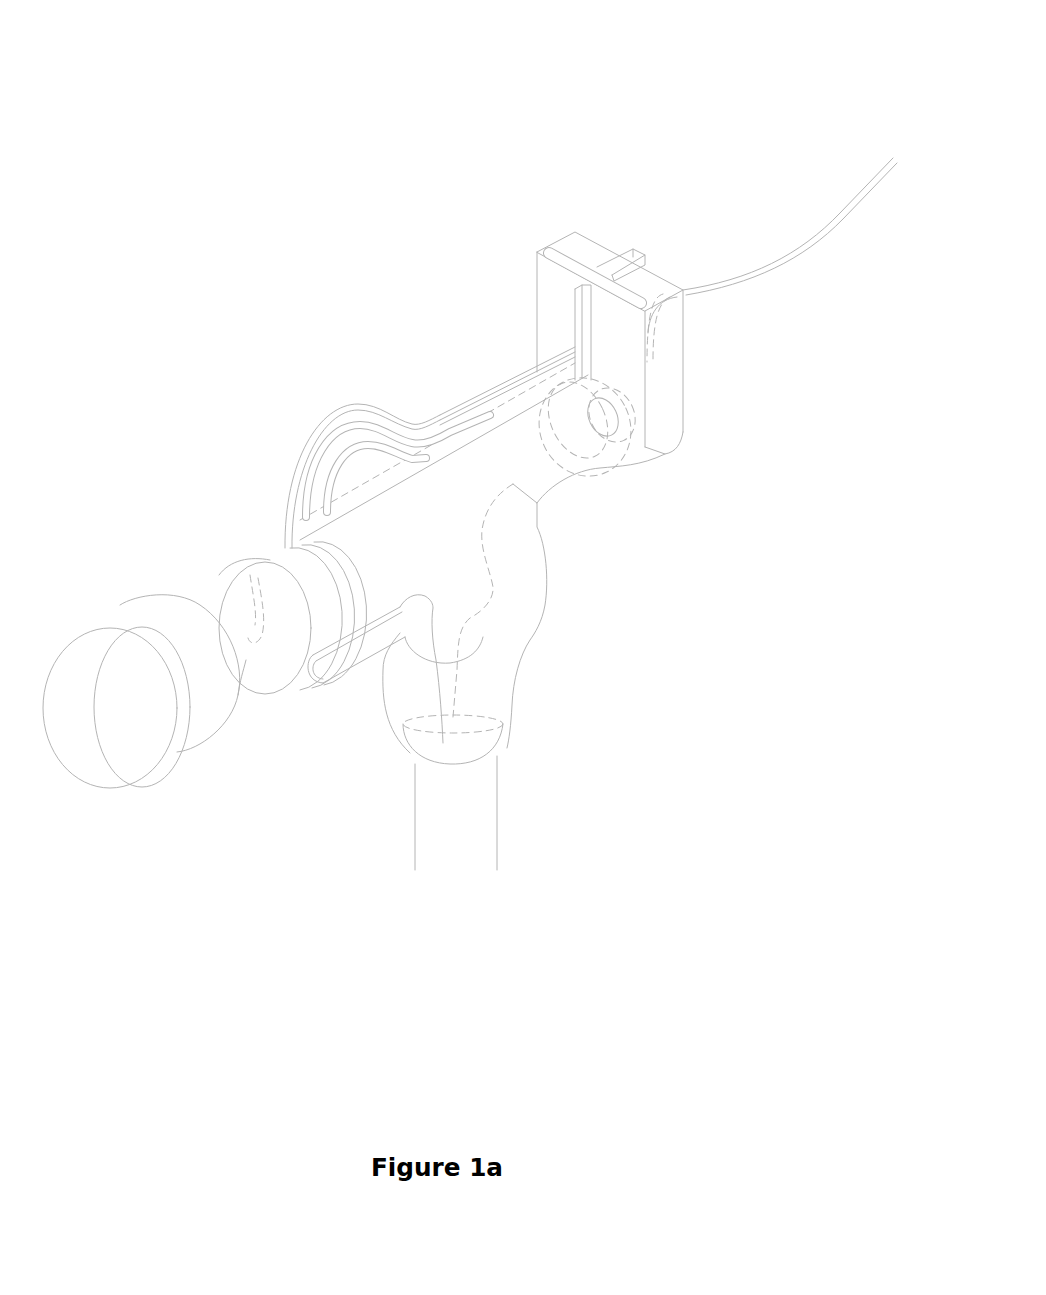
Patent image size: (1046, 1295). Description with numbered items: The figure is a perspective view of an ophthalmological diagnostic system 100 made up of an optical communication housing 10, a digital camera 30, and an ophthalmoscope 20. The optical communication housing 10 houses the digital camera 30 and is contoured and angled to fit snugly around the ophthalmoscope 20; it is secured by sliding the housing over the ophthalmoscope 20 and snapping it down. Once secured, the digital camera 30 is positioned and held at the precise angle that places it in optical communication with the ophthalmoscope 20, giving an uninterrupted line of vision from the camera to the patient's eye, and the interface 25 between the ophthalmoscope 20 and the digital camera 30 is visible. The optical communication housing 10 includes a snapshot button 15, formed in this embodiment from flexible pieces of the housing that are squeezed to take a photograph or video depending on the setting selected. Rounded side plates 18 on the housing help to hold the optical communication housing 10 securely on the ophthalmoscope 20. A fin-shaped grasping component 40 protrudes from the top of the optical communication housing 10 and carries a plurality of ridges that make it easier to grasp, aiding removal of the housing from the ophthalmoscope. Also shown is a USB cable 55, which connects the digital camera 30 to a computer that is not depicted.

The ophthalmological diagnostic system 100 is at (498, 50).
The optical communication housing 10 is at (478, 398).
The snapshot button 15 is at (603, 262).
The side plates 18 is at (508, 590).
The ophthalmoscope 20 is at (407, 703).
The interface 25 is at (596, 456).
The digital camera 30 is at (660, 440).
The grasping component 40 is at (320, 450).
The USB cable 55 is at (842, 215).